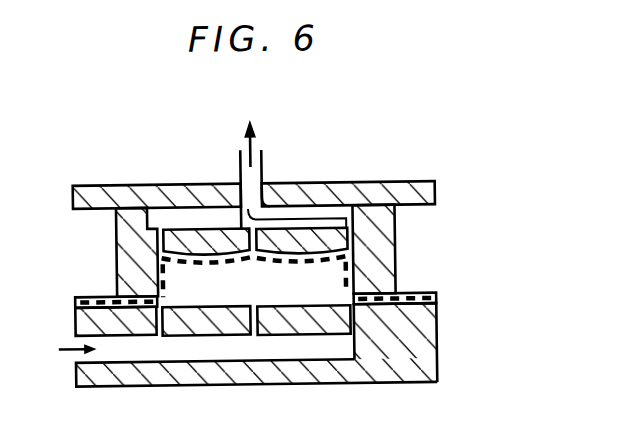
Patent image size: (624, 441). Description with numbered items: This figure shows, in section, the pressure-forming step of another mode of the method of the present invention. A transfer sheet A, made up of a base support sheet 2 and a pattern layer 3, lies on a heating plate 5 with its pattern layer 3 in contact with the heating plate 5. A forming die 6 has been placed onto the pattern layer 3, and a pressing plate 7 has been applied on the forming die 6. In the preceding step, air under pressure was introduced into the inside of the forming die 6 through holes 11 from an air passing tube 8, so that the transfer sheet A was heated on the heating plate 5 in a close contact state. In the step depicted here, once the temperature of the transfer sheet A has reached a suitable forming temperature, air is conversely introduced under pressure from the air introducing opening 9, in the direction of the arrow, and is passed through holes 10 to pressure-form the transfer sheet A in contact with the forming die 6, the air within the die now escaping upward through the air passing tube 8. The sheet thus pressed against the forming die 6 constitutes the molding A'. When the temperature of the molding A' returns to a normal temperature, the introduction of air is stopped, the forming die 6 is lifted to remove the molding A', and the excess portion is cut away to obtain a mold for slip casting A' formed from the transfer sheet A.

The base support sheet 2 is at (420, 294).
The pattern layer 3 is at (422, 308).
The heating plate 5 is at (364, 376).
The forming die 6 is at (396, 247).
The pressing plate 7 is at (385, 192).
The air passing tube 8 is at (266, 159).
The air introducing opening 9 is at (57, 346).
The holes 10 is at (349, 336).
The holes 11 is at (253, 250).
The transfer sheet A is at (459, 299).
The molding A' is at (255, 279).